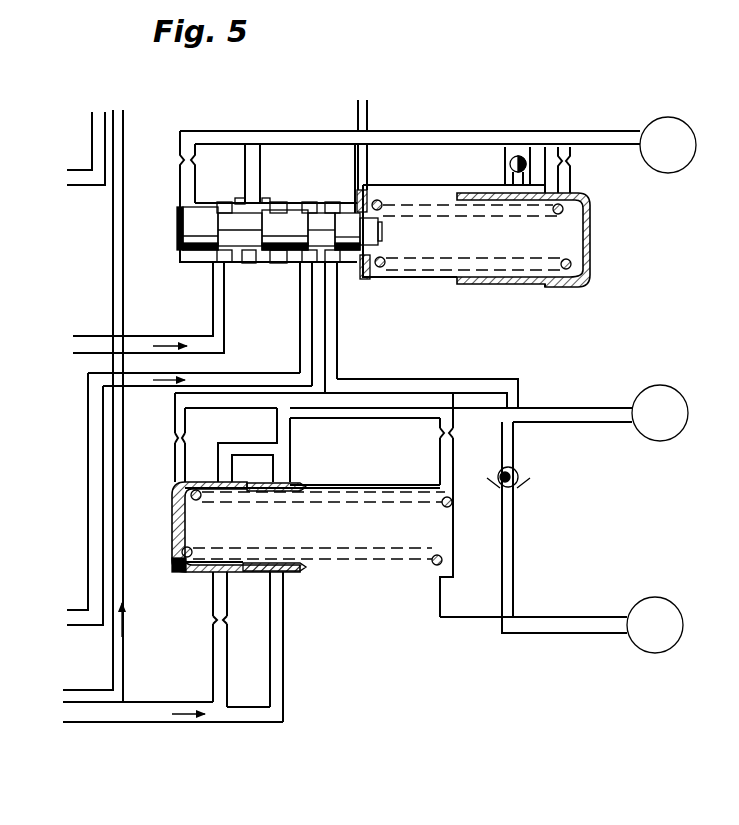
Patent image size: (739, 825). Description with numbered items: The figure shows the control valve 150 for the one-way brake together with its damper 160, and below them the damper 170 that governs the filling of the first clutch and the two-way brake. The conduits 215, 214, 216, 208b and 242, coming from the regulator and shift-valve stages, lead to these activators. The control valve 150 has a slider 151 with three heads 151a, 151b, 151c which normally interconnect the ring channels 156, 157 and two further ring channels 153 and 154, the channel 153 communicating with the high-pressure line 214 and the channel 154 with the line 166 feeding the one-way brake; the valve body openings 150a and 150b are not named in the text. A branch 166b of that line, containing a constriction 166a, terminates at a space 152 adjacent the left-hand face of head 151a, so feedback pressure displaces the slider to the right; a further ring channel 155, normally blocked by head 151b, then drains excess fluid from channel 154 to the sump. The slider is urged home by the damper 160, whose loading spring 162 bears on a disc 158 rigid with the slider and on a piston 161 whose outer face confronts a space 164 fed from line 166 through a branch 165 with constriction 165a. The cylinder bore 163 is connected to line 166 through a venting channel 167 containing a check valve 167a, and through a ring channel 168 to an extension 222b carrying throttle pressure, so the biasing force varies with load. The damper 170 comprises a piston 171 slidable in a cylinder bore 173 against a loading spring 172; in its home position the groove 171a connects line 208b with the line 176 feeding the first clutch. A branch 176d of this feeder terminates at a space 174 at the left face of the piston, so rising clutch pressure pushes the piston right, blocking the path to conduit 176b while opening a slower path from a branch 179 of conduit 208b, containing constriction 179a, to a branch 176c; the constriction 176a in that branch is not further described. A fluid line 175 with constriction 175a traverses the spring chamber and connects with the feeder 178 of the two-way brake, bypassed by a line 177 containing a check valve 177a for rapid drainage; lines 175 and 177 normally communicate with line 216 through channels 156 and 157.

The conduit 215 is at (92, 122).
The third conduit 242 is at (110, 672).
The line 216 is at (75, 627).
The high-pressure line 214 is at (152, 345).
The bypass line extension 208b is at (160, 717).
The constriction 179a is at (213, 622).
The branch of conduit 208b 179 is at (222, 667).
The line feeding brake B1F 166 is at (433, 150).
The constriction 166a is at (178, 160).
The branch of line 166 166b is at (225, 135).
The extension of conduit 222 222b is at (358, 116).
The slider 151 is at (305, 202).
The control valve 150 is at (152, 223).
The port 150a is at (236, 200).
The port 150b is at (268, 201).
The space 152 is at (178, 252).
The slider head 151a is at (201, 228).
The slider head 151b is at (285, 230).
The slider head 151c is at (350, 222).
The disc 158 is at (370, 197).
The ring channel 153 is at (220, 258).
The ring channel 154 is at (248, 264).
The ring channel 155 is at (278, 264).
The ring channel 156 is at (308, 262).
The ring channel 157 is at (331, 262).
The damper 160 is at (603, 237).
The piston 161 is at (512, 280).
The space 164 is at (580, 285).
The loading spring 162 is at (432, 271).
The cylinder bore 163 is at (466, 235).
The ring channel 168 is at (369, 279).
The venting channel 167 is at (516, 179).
The check valve 167a is at (509, 159).
The branch of line 166 165 is at (567, 184).
The constriction 165a is at (575, 163).
The feeder line of clutch K1 176 is at (368, 412).
The line 177 is at (512, 392).
The check valve 177a is at (520, 470).
The feeder of brake B1 178 is at (540, 620).
The branch of feeder line 176d is at (174, 402).
The orifice 176a is at (174, 438).
The branch of conduit 176b 176c is at (248, 452).
The conduit 176b is at (283, 470).
The fluid line 175 is at (447, 462).
The constriction 175a is at (440, 435).
The damper 170 is at (172, 512).
The space 174 is at (176, 574).
The piston 171 is at (197, 572).
The groove 171a is at (261, 572).
The loading spring 172 is at (325, 562).
The cylinder bore 173 is at (415, 522).